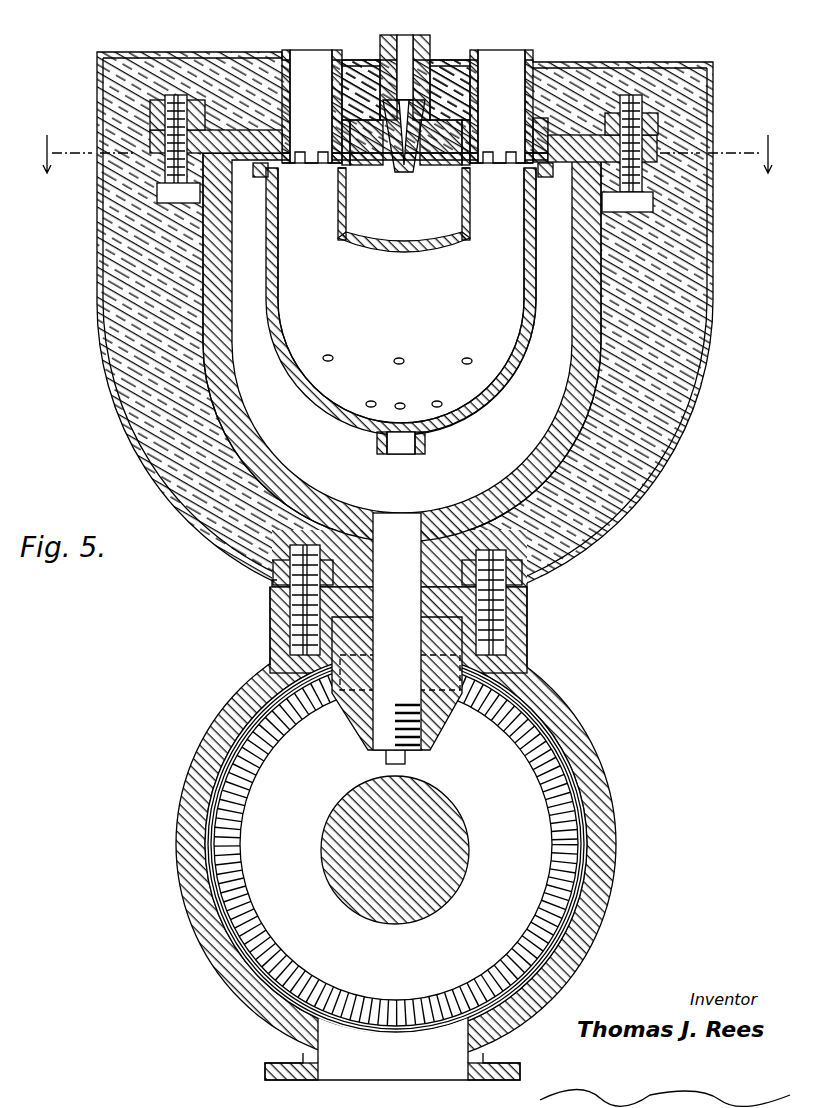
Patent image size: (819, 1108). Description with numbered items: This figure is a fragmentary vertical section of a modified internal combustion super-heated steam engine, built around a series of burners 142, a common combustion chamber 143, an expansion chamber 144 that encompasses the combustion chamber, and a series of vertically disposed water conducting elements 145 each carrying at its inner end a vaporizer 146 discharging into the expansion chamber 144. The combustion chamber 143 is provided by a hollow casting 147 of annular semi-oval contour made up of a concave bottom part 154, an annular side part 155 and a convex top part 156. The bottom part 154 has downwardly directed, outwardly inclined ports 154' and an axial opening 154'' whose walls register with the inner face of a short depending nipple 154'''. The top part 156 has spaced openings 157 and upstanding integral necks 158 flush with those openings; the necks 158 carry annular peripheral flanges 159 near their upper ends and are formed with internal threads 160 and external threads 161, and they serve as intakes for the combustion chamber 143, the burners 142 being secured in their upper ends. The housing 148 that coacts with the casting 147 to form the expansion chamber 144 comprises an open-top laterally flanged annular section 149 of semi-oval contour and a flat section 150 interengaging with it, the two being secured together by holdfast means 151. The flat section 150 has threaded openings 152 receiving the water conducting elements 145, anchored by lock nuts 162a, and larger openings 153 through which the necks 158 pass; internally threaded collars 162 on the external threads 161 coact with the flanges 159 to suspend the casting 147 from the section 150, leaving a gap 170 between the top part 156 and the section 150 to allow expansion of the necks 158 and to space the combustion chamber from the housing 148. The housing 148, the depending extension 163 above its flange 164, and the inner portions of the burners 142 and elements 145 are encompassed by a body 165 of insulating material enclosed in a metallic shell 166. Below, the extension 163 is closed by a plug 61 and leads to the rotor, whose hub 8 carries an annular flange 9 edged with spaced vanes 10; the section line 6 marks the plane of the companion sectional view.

The section line 6 is at (405, 610).
The hub 8 is at (325, 820).
The annular flange 9 is at (270, 852).
The vanes 10 is at (535, 712).
The plug 61 is at (390, 725).
The burners 142 is at (312, 58).
The combustion chamber 143 is at (460, 321).
The expansion chamber 144 is at (402, 336).
The water conducting elements 145 is at (420, 48).
The vaporizer 146 is at (403, 178).
The casting 147 is at (540, 283).
The housing 148 is at (250, 447).
The annular housing section 149 is at (160, 183).
The flat housing section 150 is at (600, 150).
The holdfast means 151 is at (650, 113).
The threaded openings 152 is at (375, 168).
The openings 153 is at (440, 168).
The concave bottom part 154 is at (399, 413).
The ports 154' is at (397, 377).
The opening 154'' is at (419, 419).
The nipple 154''' is at (391, 458).
The annular side part 155 is at (280, 290).
The convex top part 156 is at (398, 245).
The openings 157 is at (403, 216).
The necks 158 is at (340, 205).
The annular peripheral flanges 159 is at (262, 177).
The internal threads 160 is at (542, 128).
The external threads 161 is at (480, 128).
The collars 162 is at (262, 112).
The lock nuts 162a is at (376, 110).
The depending extension 163 is at (435, 565).
The flange 164 is at (527, 605).
The body of insulating material 165 is at (648, 410).
The metallic shell 166 is at (700, 363).
The gap 170 is at (338, 145).